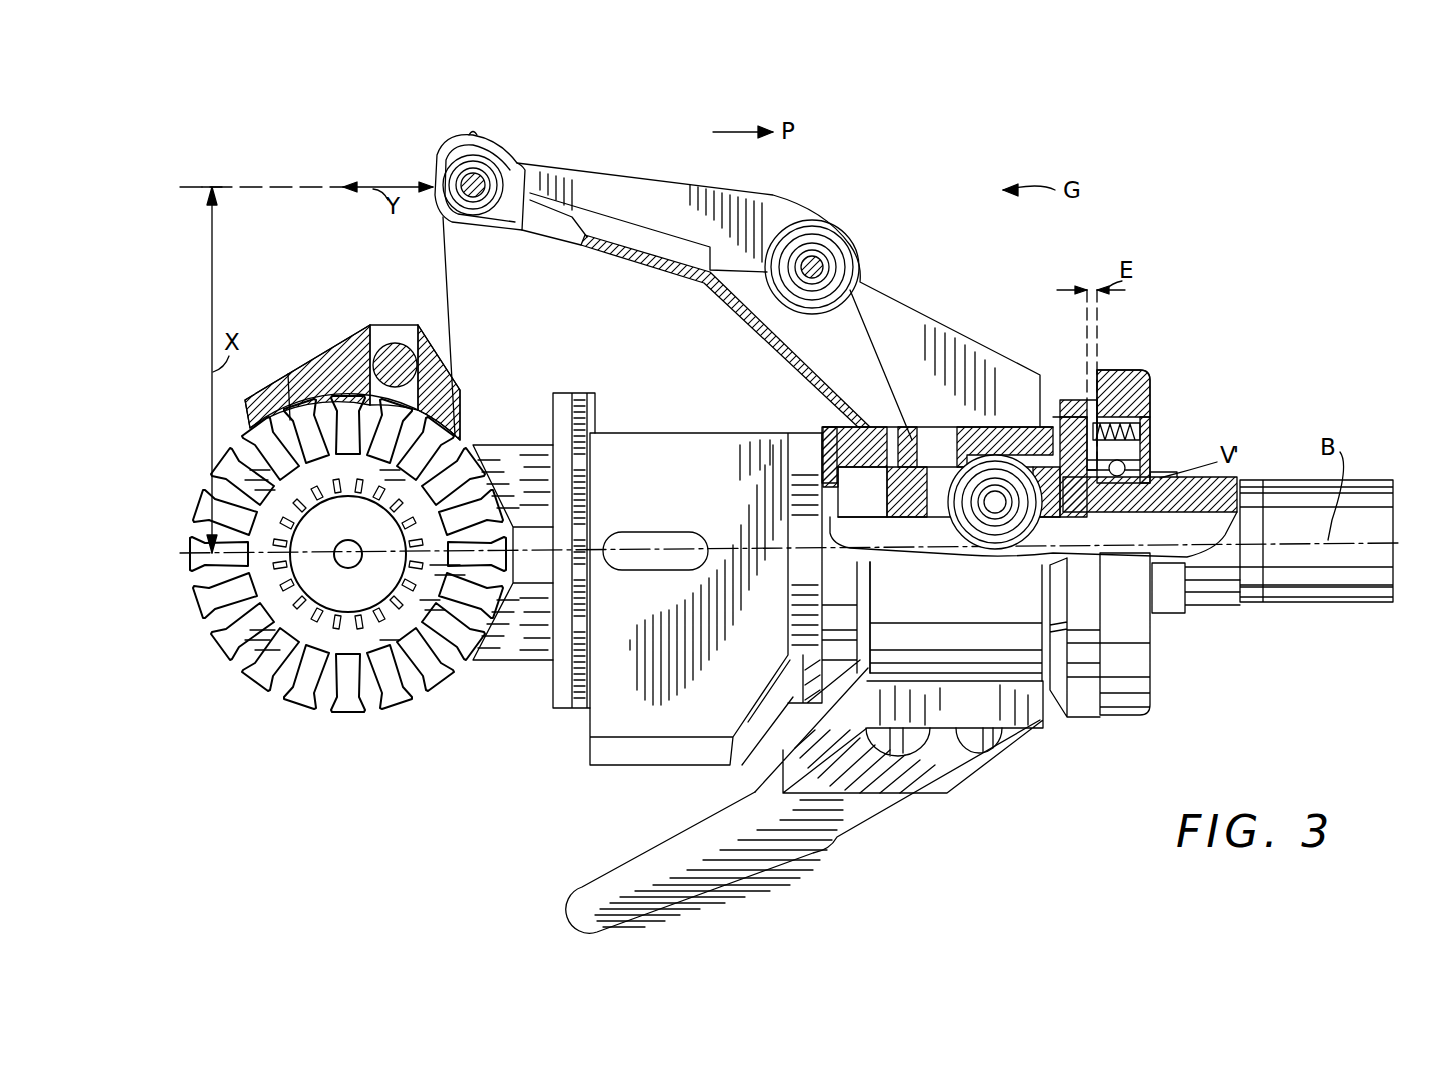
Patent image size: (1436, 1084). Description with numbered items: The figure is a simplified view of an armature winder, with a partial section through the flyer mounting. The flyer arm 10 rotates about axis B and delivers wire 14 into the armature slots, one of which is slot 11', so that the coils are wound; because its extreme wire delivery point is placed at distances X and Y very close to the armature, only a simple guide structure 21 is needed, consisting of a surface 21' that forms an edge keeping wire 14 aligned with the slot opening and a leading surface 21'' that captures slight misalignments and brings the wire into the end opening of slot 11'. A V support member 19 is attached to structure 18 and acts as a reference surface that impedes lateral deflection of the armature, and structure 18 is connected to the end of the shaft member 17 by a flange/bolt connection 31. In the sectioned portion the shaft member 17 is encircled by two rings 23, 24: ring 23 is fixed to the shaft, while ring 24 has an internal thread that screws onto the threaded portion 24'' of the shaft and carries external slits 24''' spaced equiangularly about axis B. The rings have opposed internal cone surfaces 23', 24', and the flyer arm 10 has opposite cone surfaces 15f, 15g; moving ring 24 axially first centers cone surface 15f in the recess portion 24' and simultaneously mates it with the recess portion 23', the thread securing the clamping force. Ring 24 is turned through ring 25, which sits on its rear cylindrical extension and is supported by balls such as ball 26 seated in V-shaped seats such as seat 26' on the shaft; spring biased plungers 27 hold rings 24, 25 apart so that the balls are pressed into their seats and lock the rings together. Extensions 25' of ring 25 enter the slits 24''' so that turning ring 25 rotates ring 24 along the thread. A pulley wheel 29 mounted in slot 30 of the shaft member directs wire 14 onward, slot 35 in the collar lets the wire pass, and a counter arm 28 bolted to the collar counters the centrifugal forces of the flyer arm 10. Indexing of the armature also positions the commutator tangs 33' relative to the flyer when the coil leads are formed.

The flyer arm 10 is at (868, 218).
The slot 11' is at (352, 554).
The wire 14 is at (452, 323).
The cone surface 15f is at (870, 460).
The cone surface 15g is at (1023, 447).
The shaft member 17 is at (1300, 595).
The structure 18 is at (634, 748).
The V support member 19 is at (556, 685).
The guide structure 21 is at (352, 354).
The surface 21' is at (443, 370).
The leading surface 21'' is at (406, 333).
The ring 23 is at (809, 568).
The internal cone surface 23' is at (783, 434).
The ring 24 is at (1010, 651).
The internal cone surface 24' is at (1062, 376).
The threaded portion 24'' is at (1082, 480).
The external slits 24''' is at (1049, 377).
The ring 25 is at (1155, 417).
The extensions 25' is at (1127, 397).
The ball 26 is at (1161, 447).
The V-shaped seat 26' is at (1150, 507).
The spring biased plungers 27 is at (1140, 430).
The counter arm 28 is at (748, 888).
The pulley wheel 29 is at (977, 507).
The slot 30 is at (945, 450).
The flange/bolt connection 31 is at (887, 731).
The tangs 33' is at (348, 565).
The slot 35 is at (903, 440).